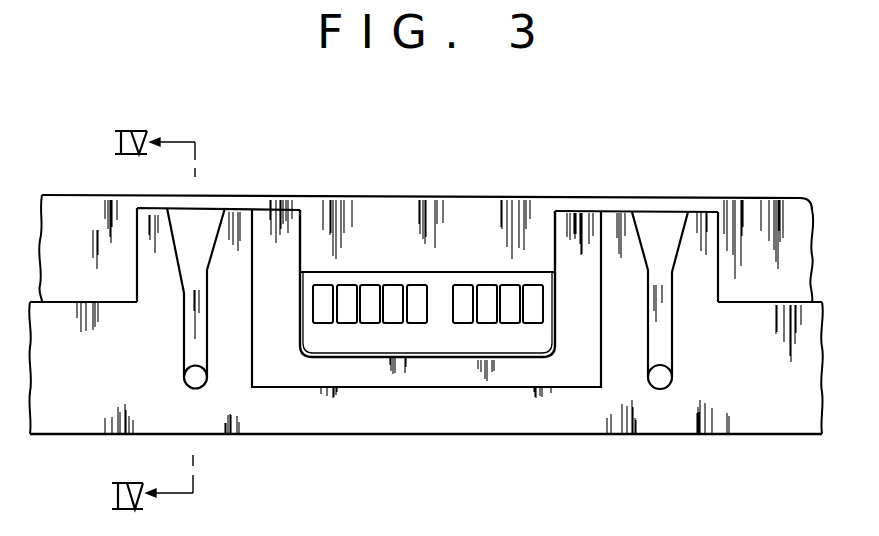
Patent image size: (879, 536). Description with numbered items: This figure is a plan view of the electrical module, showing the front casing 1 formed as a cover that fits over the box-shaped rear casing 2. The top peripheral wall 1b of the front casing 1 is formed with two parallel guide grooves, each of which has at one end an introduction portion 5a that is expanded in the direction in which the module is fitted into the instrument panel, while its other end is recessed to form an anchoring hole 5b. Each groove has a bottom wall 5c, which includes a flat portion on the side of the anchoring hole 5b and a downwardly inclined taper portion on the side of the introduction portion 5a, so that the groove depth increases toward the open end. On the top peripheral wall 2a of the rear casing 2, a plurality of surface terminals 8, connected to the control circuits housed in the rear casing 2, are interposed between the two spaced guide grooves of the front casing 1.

The front casing 1 is at (739, 436).
The top peripheral wall 1b is at (787, 395).
The rear casing 2 is at (748, 199).
The top peripheral wall 2a is at (787, 242).
The introduction portion 5a is at (642, 233).
The anchoring hole 5b is at (655, 381).
The bottom wall 5c is at (665, 313).
The surface terminals 8 is at (530, 288).